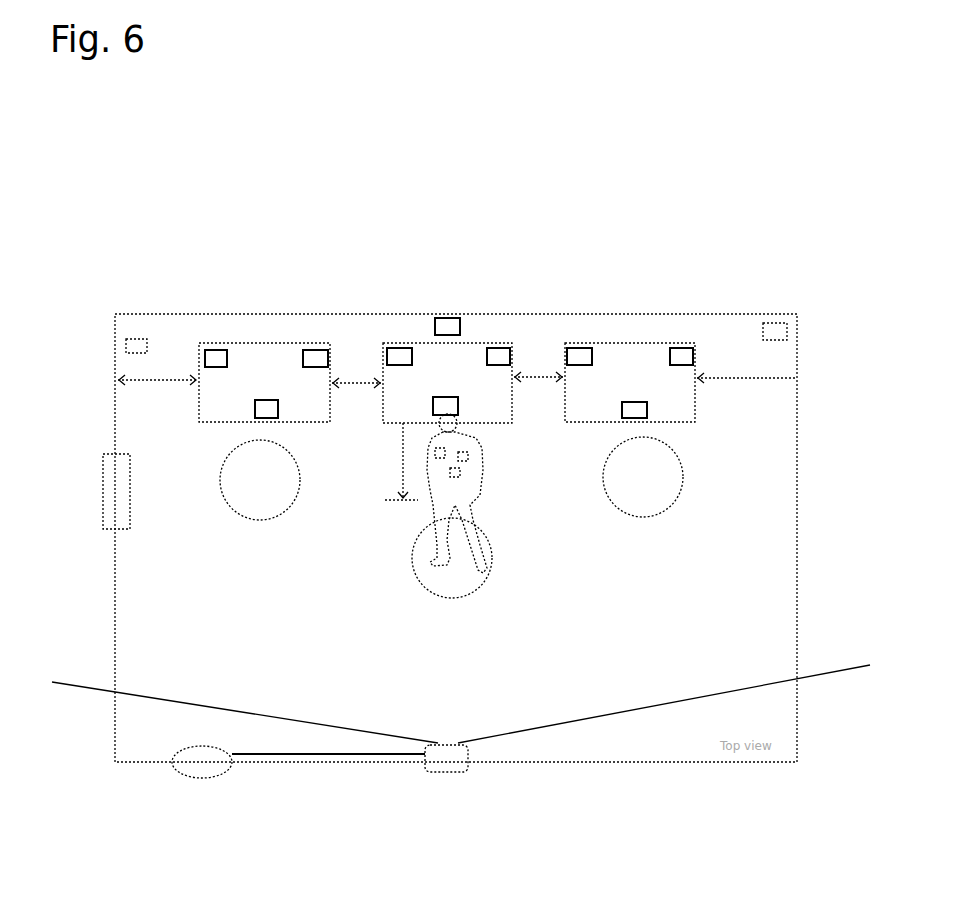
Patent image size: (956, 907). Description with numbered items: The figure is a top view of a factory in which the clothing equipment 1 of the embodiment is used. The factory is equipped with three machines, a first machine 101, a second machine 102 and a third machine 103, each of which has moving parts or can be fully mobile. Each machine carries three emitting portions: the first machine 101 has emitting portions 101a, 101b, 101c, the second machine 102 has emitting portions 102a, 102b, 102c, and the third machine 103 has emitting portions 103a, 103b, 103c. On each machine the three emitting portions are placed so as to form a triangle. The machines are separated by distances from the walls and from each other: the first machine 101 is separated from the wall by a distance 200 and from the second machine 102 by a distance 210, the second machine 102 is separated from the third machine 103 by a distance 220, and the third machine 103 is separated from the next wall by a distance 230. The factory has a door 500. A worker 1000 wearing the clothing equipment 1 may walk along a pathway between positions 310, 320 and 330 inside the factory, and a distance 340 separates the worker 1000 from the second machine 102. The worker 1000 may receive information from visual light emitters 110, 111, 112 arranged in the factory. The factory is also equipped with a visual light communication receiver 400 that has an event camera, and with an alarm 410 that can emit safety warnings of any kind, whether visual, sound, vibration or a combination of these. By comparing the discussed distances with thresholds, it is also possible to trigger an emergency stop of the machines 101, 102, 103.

The clothing equipment 1 is at (450, 487).
The worker 1000 is at (448, 508).
The first machine 101 is at (215, 393).
The emitting portion 101a is at (222, 358).
The emitting portion 101b is at (267, 400).
The emitting portion 101c is at (317, 353).
The second machine 102 is at (427, 341).
The emitting portion 102a is at (405, 348).
The emitting portion 102b is at (448, 397).
The emitting portion 102c is at (492, 348).
The third machine 103 is at (685, 388).
The emitting portion 103a is at (587, 355).
The emitting portion 103b is at (635, 402).
The emitting portion 103c is at (681, 348).
The visual light emitter 110 is at (125, 342).
The visual light emitter 111 is at (445, 317).
The visual light emitter 112 is at (788, 340).
The distance 200 is at (137, 378).
The distance 210 is at (353, 388).
The distance 220 is at (542, 377).
The distance 230 is at (730, 390).
The position 310 is at (260, 497).
The position 320 is at (465, 590).
The position 330 is at (652, 527).
The distance 340 is at (398, 502).
The visual light communication receiver 400 is at (457, 762).
The alarm 410 is at (210, 770).
The door 500 is at (113, 497).